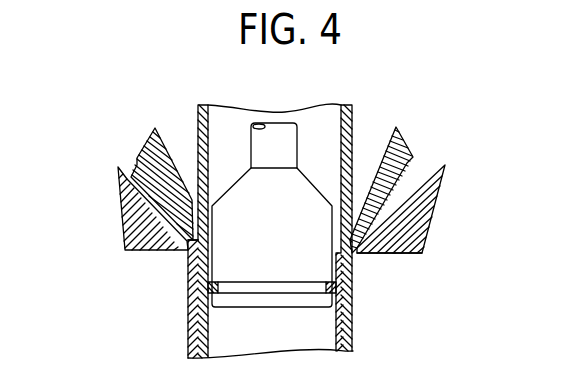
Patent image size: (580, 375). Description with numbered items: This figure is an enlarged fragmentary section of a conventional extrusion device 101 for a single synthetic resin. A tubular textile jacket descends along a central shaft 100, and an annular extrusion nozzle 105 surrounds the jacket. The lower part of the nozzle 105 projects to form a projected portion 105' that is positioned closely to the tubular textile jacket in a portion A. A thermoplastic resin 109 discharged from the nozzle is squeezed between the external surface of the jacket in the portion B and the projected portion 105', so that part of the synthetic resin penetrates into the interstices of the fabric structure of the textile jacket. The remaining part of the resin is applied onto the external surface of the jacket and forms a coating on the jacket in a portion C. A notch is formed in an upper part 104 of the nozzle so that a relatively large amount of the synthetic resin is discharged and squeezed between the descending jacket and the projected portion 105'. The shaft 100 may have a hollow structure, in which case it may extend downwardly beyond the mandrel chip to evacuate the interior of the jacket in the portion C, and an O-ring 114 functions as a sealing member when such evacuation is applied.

The portion A is at (199, 133).
The portion B is at (181, 264).
The portion C is at (181, 327).
The shaft 100 is at (285, 140).
The extrusion device 101 is at (120, 263).
The upper part of the nozzle 104 is at (397, 140).
The annular extrusion nozzle 105 is at (421, 269).
The projected portion 105' is at (387, 280).
The thermoplastic resin 109 is at (408, 172).
The O-ring 114 is at (331, 290).